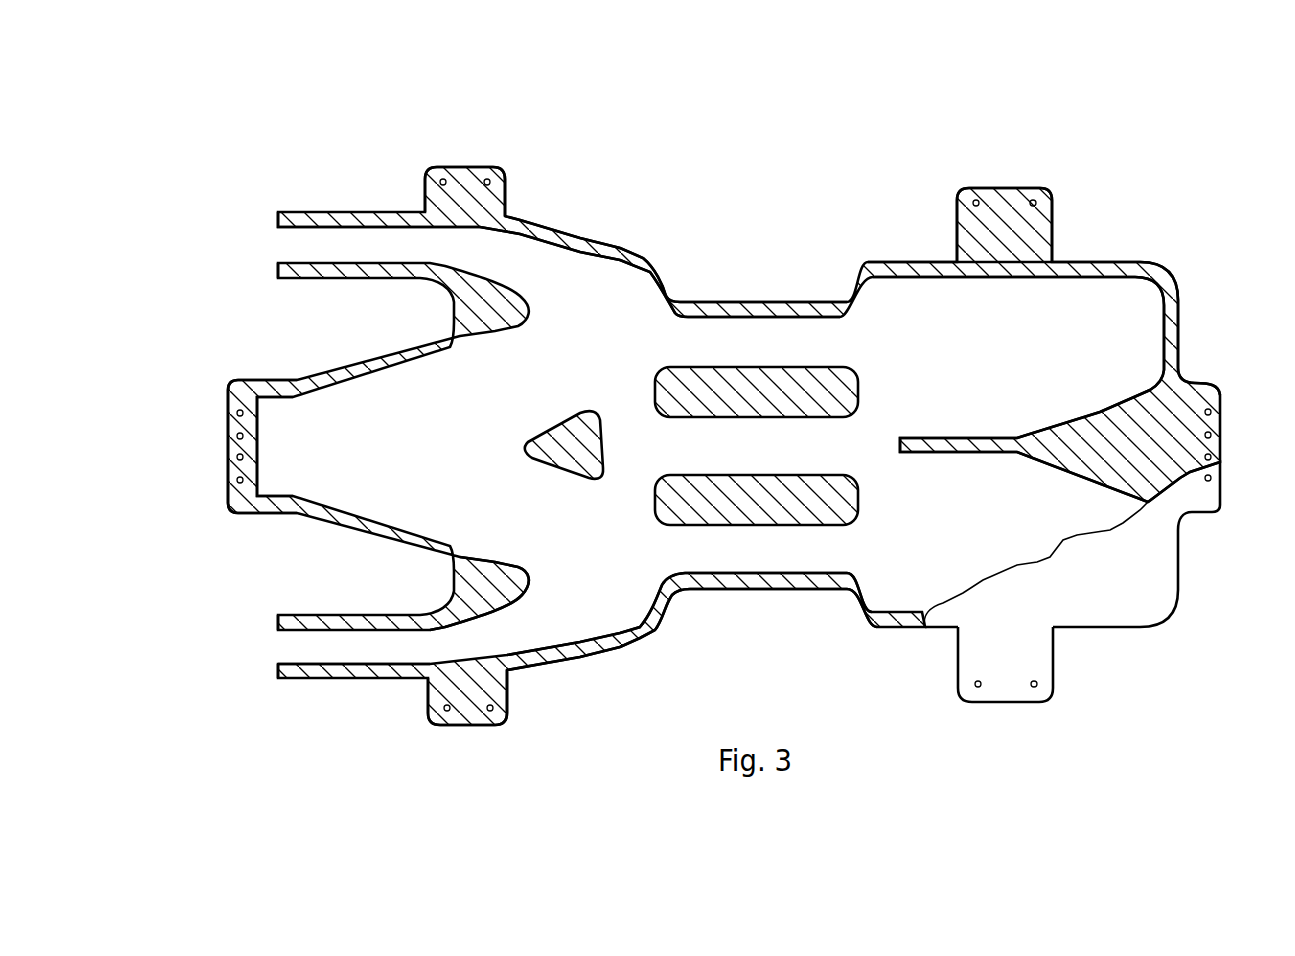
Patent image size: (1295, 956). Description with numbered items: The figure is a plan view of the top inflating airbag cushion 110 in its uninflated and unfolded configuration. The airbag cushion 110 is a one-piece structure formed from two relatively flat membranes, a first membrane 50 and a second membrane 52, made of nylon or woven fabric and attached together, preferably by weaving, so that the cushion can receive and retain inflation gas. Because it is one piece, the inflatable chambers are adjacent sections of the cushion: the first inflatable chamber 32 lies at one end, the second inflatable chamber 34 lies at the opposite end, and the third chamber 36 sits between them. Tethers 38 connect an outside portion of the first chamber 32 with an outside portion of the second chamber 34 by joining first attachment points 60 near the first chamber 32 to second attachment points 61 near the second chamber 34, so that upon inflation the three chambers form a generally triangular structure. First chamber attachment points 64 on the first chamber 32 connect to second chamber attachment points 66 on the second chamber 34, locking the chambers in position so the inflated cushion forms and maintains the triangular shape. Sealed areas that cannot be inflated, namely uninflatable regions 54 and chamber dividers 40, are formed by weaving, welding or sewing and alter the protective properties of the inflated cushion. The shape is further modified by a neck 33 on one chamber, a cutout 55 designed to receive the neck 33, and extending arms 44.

The top inflating airbag cushion 110 is at (236, 178).
The first inflatable chamber 32 is at (423, 460).
The neck 33 is at (267, 410).
The second inflatable chamber 34 is at (961, 387).
The third inflatable chamber 36 is at (769, 459).
The tether 38 is at (462, 166).
The chamber divider 40 is at (769, 404).
The extending arm 44 is at (306, 240).
The first membrane 50 is at (1160, 583).
The second membrane 52 is at (1108, 522).
The uninflatable region 54 is at (612, 240).
The cutout 55 is at (1040, 437).
The first attachment point 60 is at (489, 180).
The second attachment point 61 is at (975, 201).
The first chamber attachment point 64 is at (237, 479).
The second chamber attachment point 66 is at (1211, 413).